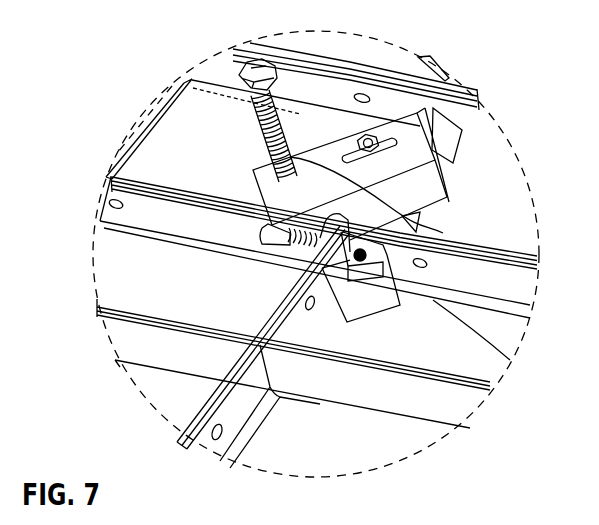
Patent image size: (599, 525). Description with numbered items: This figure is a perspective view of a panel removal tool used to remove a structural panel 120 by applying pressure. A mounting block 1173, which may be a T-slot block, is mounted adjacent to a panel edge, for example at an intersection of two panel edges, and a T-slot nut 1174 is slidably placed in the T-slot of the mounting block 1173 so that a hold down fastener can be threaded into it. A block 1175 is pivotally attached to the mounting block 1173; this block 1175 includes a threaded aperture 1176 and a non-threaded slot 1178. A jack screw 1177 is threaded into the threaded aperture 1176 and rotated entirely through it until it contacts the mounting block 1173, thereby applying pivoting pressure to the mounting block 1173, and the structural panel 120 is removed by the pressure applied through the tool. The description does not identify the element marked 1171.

The structural panel 120 is at (187, 293).
The upper rail 1171 is at (478, 95).
The mounting block 1173 is at (267, 218).
The T-slot nut 1174 is at (413, 342).
The block 1175 is at (272, 225).
The threaded aperture 1176 is at (418, 223).
The jack screw 1177 is at (214, 63).
The non-threaded slot 1178 is at (445, 132).